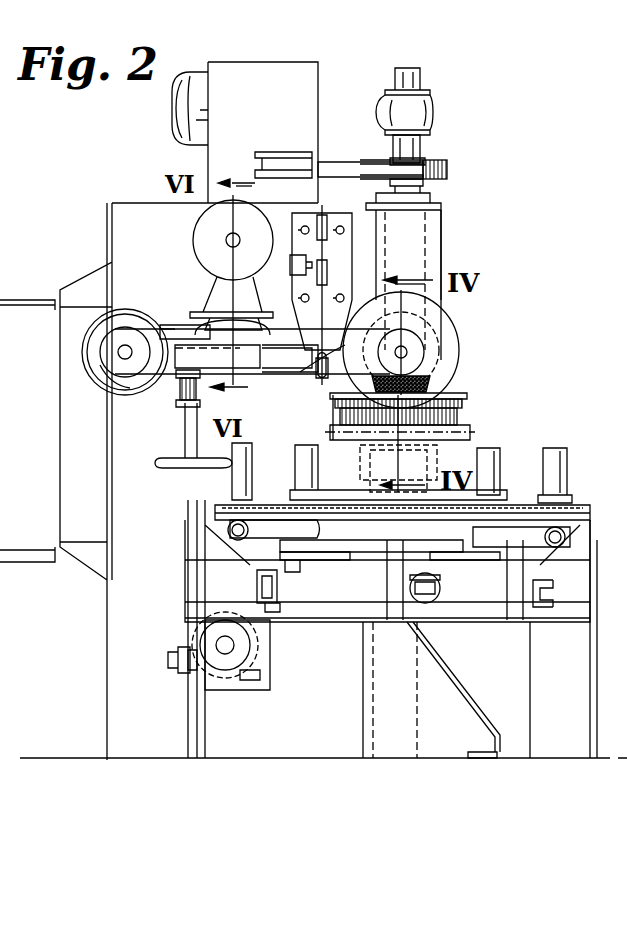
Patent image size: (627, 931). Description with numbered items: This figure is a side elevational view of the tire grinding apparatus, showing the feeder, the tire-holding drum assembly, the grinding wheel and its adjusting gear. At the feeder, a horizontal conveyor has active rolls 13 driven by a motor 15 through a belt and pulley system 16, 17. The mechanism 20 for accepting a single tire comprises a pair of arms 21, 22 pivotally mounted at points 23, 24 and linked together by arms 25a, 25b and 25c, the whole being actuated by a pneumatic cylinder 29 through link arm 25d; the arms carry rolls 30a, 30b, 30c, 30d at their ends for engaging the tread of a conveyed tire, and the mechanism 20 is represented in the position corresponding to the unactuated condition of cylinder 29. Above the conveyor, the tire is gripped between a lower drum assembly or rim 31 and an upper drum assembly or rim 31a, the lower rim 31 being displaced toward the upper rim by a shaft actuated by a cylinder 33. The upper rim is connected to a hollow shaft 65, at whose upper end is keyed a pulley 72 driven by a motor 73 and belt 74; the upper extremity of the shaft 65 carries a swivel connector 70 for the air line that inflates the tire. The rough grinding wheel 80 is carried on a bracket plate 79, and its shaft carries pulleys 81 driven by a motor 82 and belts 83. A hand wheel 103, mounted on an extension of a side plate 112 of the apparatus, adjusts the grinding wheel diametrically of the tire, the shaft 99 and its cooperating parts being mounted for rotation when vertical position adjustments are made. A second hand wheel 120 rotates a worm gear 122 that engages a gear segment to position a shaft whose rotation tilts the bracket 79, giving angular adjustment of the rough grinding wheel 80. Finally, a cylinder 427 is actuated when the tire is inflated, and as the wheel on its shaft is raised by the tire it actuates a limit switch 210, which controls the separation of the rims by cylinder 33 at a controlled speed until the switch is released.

The active rolls 13 is at (330, 512).
The motor 15 is at (225, 665).
The belt 16 is at (190, 565).
The pulley 17 is at (178, 668).
The mechanism 20 is at (538, 447).
The arm 21 is at (262, 528).
The arm 22 is at (510, 535).
The pivot point 23 is at (275, 590).
The pivot point 24 is at (515, 600).
The link arm 25a is at (300, 552).
The link arm 25b is at (415, 560).
The link arm 25c is at (490, 552).
The link arm 25d is at (425, 595).
The pneumatic cylinder 29 is at (418, 592).
The roll 30a is at (300, 462).
The roll 30b is at (232, 472).
The roll 30c is at (490, 462).
The roll 30d is at (560, 472).
The lower drum assembly or rim 31 is at (445, 436).
The upper drum assembly or rim 31a is at (336, 410).
The cylinder 33 is at (392, 737).
The hollow shaft 65 is at (412, 160).
The swivel connector 70 is at (428, 104).
The pulley 72 is at (430, 186).
The motor 73 is at (178, 100).
The belt 74 is at (336, 160).
The bracket plate 79 is at (284, 376).
The rough grinding wheel 80 is at (432, 381).
The pulleys 81 is at (415, 350).
The motor 82 is at (103, 385).
The belts 83 is at (152, 335).
The shaft 99 is at (230, 330).
The hand wheel 103 is at (205, 228).
The side plate 112 is at (125, 246).
The hand wheel 120 is at (170, 460).
The worm gear 122 is at (185, 402).
The limit switch 210 is at (291, 265).
The cylinder 427 is at (322, 225).